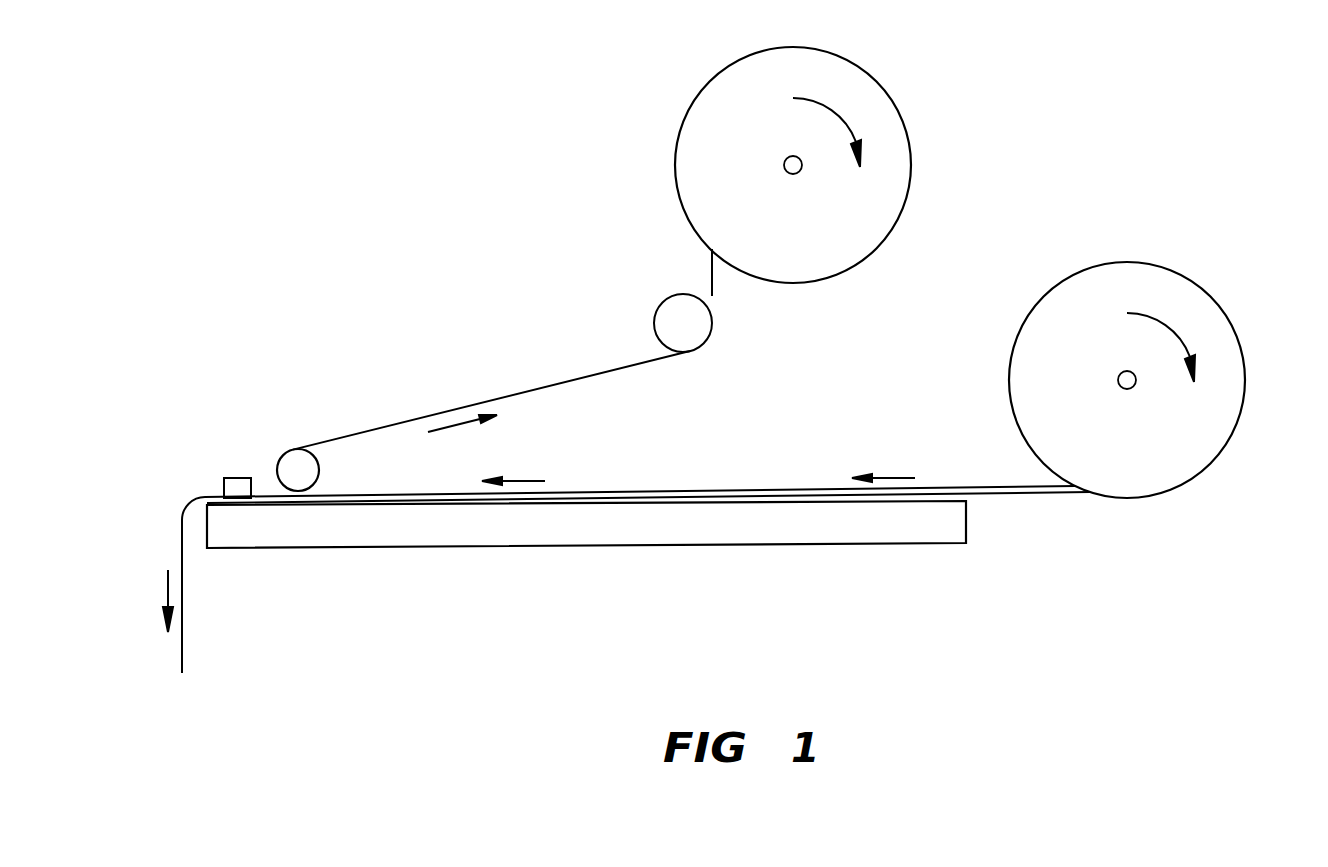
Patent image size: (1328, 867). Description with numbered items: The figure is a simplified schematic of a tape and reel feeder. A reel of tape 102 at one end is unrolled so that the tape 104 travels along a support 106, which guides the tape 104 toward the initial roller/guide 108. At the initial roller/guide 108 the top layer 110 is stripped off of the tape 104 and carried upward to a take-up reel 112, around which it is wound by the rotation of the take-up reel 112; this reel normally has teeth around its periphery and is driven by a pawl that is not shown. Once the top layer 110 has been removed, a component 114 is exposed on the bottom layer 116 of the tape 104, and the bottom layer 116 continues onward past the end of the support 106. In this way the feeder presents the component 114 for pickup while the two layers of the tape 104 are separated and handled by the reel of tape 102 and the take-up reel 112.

The reel of tape 102 is at (1238, 330).
The tape 104 is at (698, 487).
The support 106 is at (653, 543).
The initial roller/guide 108 is at (323, 473).
The top layer 110 is at (409, 417).
The take-up reel 112 is at (905, 120).
The component 114 is at (233, 488).
The bottom layer 116 is at (178, 550).